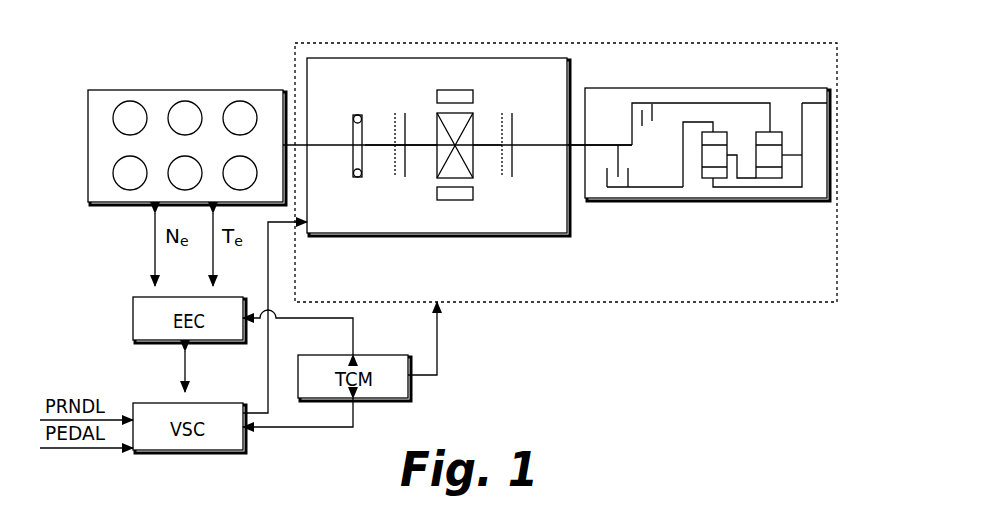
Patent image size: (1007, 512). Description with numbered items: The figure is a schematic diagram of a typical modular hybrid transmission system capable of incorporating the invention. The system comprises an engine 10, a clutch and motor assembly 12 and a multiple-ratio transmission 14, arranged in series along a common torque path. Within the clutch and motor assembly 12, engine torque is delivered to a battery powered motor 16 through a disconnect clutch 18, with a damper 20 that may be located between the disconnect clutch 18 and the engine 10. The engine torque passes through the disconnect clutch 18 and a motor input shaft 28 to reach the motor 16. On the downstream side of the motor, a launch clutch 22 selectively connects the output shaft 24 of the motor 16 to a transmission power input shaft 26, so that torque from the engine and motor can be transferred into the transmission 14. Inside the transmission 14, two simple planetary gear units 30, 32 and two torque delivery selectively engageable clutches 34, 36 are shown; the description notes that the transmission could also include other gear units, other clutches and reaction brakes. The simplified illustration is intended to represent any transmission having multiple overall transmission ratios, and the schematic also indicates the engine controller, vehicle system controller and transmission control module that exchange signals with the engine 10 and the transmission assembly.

The engine 10 is at (187, 90).
The clutch and motor assembly 12 is at (437, 58).
The multiple-ratio transmission 14 is at (703, 88).
The battery powered motor 16 is at (453, 88).
The disconnect clutch 18 is at (405, 138).
The damper 20 is at (353, 128).
The launch clutch 22 is at (512, 160).
The output shaft 24 is at (486, 147).
The transmission power input shaft 26 is at (577, 143).
The motor input shaft 28 is at (421, 150).
The simple planetary gear unit 30 is at (778, 132).
The simple planetary gear unit 32 is at (702, 172).
The torque delivery selectively engageable clutch 34 is at (618, 193).
The torque delivery selectively engageable clutch 36 is at (640, 100).